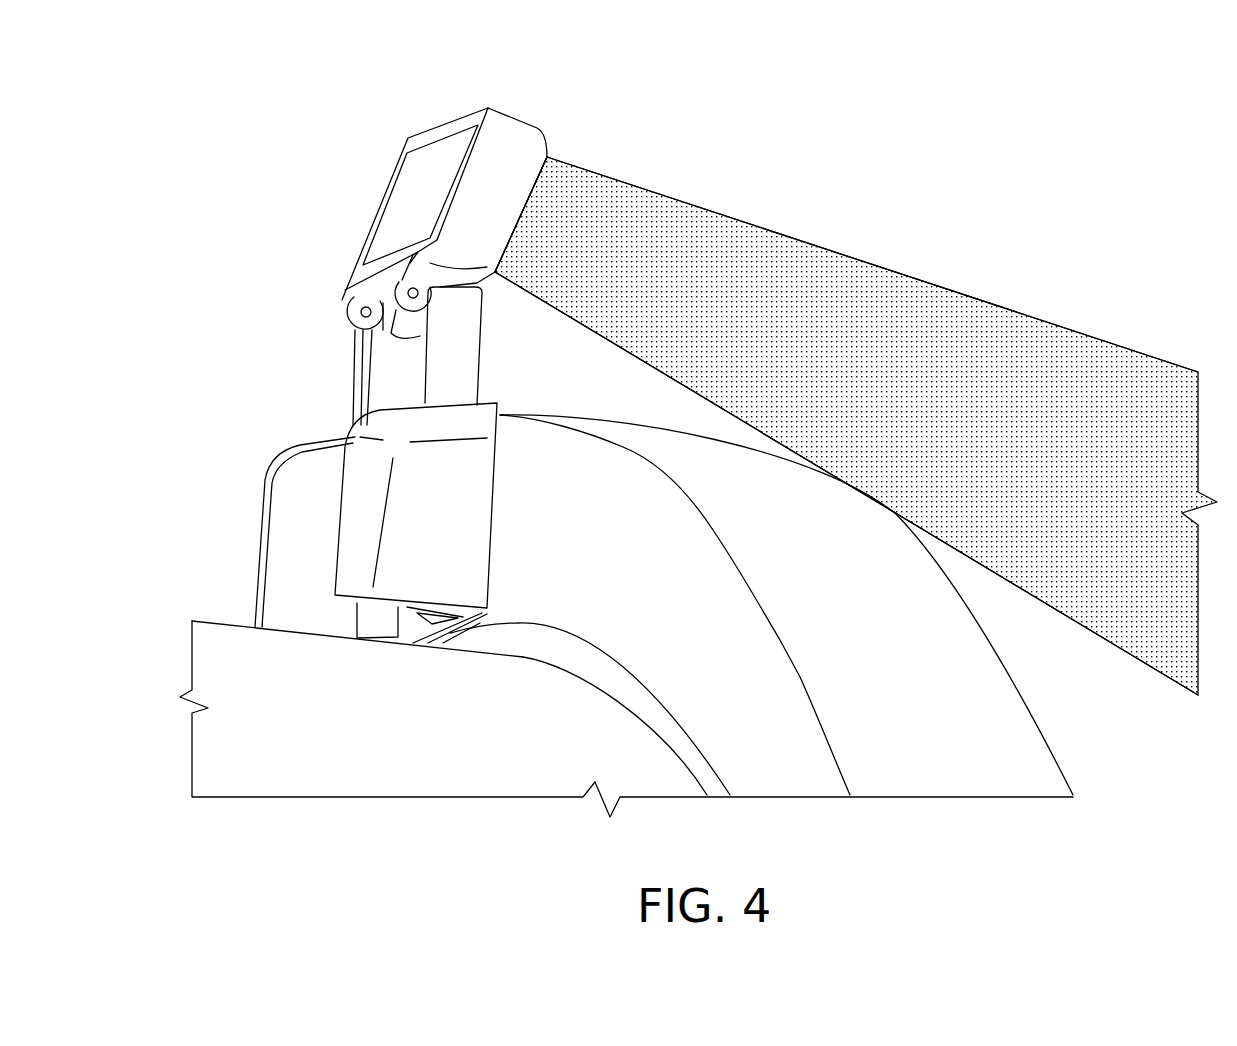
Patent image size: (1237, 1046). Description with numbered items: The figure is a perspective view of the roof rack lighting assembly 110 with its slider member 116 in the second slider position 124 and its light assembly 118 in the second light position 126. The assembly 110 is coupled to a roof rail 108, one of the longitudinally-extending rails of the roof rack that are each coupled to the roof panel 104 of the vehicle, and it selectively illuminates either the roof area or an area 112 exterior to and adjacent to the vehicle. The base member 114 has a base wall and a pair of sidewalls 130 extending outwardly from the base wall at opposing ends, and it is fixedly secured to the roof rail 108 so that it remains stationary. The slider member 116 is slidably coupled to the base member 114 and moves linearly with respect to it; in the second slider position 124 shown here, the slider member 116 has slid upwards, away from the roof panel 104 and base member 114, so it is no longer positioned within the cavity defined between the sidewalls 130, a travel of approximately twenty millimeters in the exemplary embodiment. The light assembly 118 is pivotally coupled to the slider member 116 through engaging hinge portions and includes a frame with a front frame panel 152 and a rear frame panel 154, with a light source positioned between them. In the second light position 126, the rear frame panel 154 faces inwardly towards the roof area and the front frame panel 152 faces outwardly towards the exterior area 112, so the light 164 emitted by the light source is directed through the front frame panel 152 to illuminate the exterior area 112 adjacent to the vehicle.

The roof panel 104 is at (366, 732).
The roof rail 108 is at (690, 698).
The roof rack lighting assembly 110 is at (376, 323).
The exterior area 112 is at (1128, 457).
The base member 114 is at (265, 500).
The slider member 116 is at (455, 345).
The light assembly 118 is at (478, 151).
The second slider position 124 is at (318, 370).
The second light position 126 is at (478, 151).
The sidewall 130 is at (472, 428).
The front frame panel 152 is at (533, 153).
The rear frame panel 154 is at (415, 168).
The light 164 is at (842, 254).